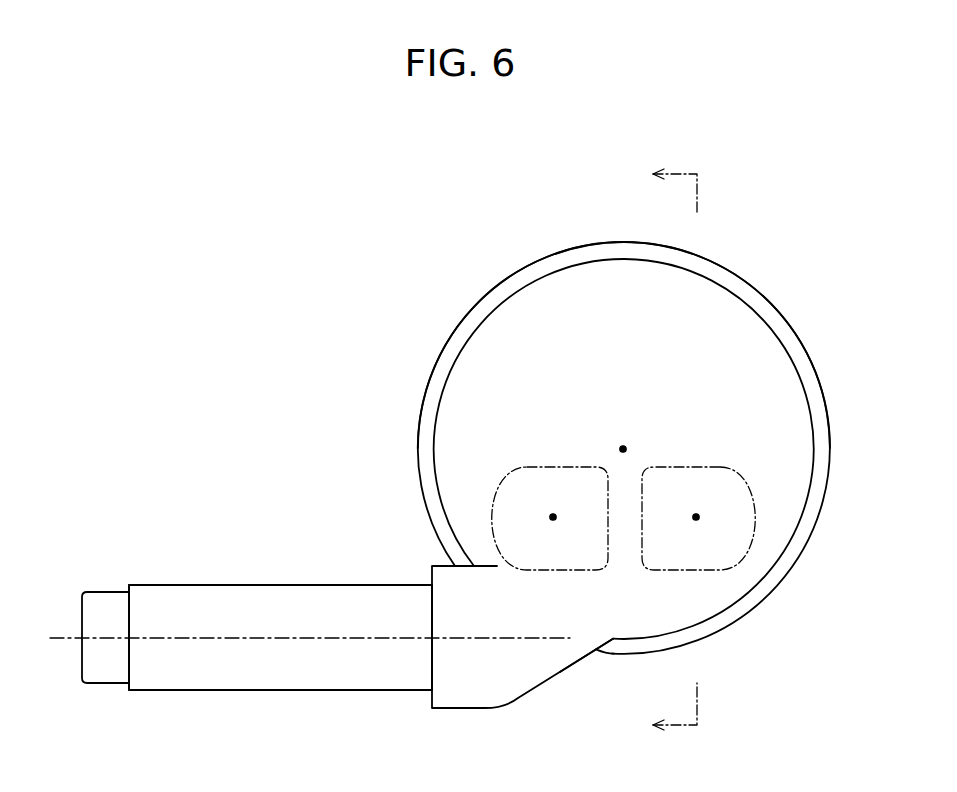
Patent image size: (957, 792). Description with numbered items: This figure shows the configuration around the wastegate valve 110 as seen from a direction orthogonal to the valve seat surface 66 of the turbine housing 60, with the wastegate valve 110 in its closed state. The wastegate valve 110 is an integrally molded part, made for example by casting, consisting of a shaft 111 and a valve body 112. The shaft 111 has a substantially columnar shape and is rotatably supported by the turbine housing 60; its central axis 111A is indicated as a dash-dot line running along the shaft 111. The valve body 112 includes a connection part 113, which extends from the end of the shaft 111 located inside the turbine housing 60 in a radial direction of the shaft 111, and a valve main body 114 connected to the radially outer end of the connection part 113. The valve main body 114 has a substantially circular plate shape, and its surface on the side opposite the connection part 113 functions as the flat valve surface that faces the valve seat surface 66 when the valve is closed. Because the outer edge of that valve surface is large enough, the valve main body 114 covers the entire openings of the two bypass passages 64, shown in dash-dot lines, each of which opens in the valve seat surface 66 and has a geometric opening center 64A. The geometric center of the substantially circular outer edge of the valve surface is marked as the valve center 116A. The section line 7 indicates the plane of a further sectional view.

The section line VII-VII 7 is at (662, 452).
The turbine housing 60 is at (418, 446).
The bypass passage 64 is at (515, 478).
The opening center 64A is at (553, 521).
The valve seat surface 66 is at (497, 293).
The wastegate valve 110 is at (296, 692).
The shaft 111 is at (195, 692).
The central axis 111A is at (262, 634).
The valve body 112 is at (540, 686).
The connection part 113 is at (563, 670).
The valve main body 114 is at (797, 530).
The valve center 116A is at (623, 445).